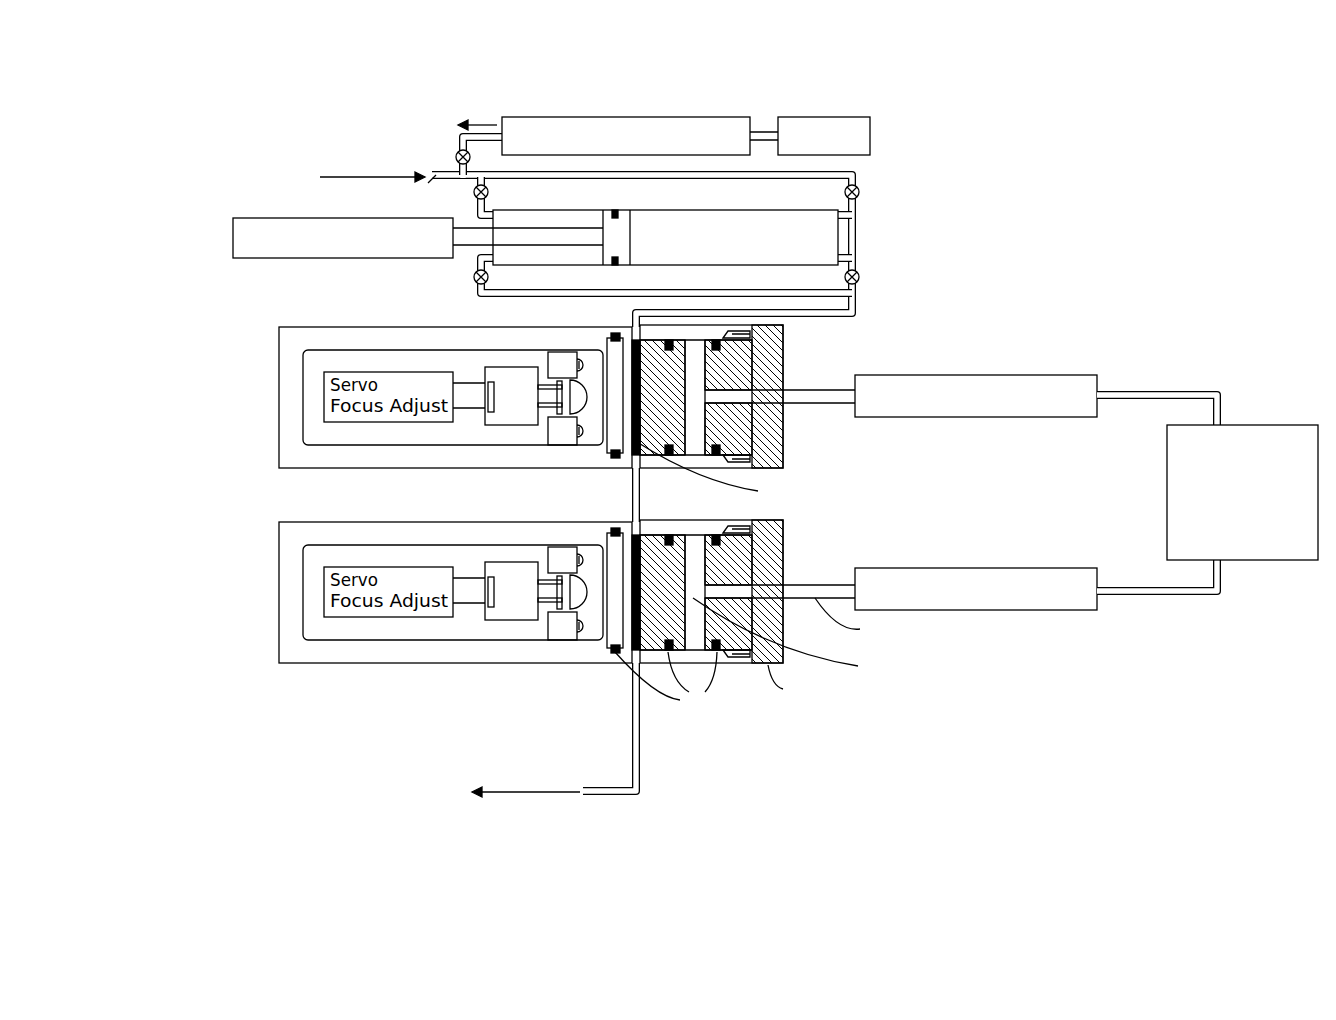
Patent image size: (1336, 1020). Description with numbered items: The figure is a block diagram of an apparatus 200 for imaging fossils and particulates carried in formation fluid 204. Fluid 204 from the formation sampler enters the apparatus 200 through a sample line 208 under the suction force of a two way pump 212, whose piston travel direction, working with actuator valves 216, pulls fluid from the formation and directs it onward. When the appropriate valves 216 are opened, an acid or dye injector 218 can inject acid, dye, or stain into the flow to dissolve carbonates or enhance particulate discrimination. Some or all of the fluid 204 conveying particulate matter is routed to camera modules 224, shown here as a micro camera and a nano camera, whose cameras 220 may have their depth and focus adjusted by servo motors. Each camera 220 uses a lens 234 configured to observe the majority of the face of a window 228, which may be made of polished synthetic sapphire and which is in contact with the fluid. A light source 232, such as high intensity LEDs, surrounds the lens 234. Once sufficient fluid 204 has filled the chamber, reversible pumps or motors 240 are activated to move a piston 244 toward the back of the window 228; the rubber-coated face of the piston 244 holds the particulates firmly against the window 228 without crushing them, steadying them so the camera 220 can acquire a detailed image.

The apparatus 200 is at (220, 88).
The formation fluid 204 is at (333, 113).
The sample line 208 is at (430, 183).
The two way pump 212 is at (841, 234).
The valves 216 is at (456, 157).
The acid injector 218 is at (625, 117).
The cameras 220 is at (510, 425).
The camera modules 224 is at (415, 468).
The window 228 is at (607, 430).
The light source 232 is at (600, 425).
The lens 234 is at (600, 370).
The pumps or motors 240 is at (965, 417).
The piston 244 is at (672, 388).